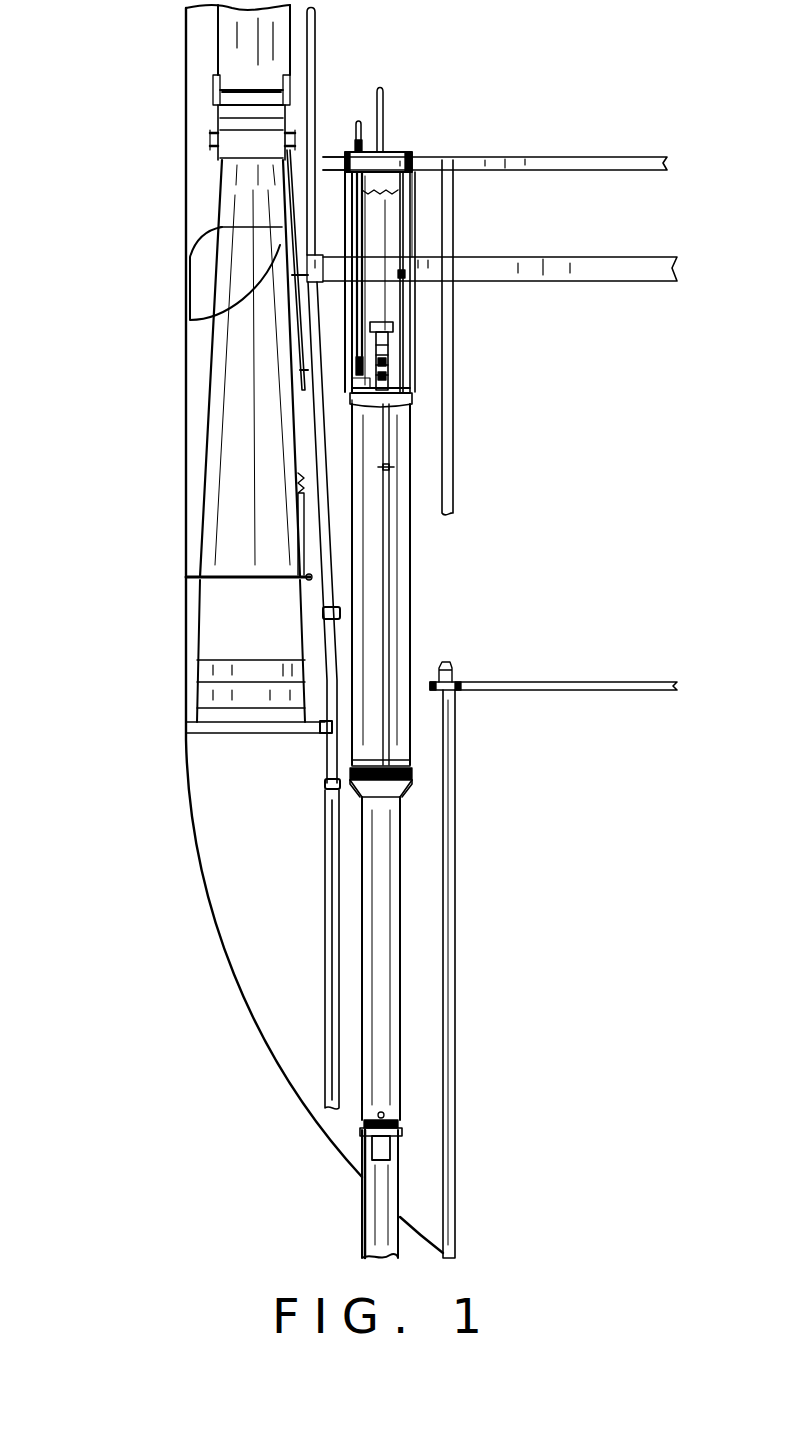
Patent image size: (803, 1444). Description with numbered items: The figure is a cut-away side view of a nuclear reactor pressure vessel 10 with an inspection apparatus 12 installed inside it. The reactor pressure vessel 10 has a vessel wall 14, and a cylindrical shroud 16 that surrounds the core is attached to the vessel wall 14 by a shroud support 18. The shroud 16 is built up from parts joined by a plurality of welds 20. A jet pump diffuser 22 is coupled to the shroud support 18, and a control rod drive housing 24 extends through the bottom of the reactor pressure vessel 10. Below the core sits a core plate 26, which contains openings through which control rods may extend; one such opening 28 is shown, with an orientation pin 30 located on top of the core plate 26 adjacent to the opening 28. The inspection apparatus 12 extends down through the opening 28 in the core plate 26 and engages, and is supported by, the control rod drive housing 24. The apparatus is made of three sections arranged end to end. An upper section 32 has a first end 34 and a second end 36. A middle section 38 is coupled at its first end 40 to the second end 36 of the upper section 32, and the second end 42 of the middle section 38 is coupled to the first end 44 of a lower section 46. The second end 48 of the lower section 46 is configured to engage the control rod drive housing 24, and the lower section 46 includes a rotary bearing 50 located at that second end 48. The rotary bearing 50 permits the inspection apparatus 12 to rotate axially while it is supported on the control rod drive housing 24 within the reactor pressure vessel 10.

The nuclear reactor pressure vessel 10 is at (135, 385).
The inspection apparatus 12 is at (443, 604).
The vessel wall 14 is at (183, 483).
The shroud 16 is at (318, 47).
The shroud support 18 is at (340, 706).
The welds 20 is at (325, 614).
The jet pump diffuser 22 is at (230, 551).
The control rod drive housing 24 is at (362, 1228).
The core plate 26 is at (625, 155).
The opening 28 is at (412, 157).
The orientation pin 30 is at (341, 152).
The upper section 32 is at (414, 230).
The first end 34 is at (425, 192).
The second end 36 is at (417, 378).
The middle section 38 is at (414, 548).
The first end 40 is at (418, 420).
The second end 42 is at (413, 752).
The first end 44 is at (403, 812).
The lower section 46 is at (400, 958).
The second end 48 is at (400, 1097).
The rotary bearing 50 is at (398, 1126).